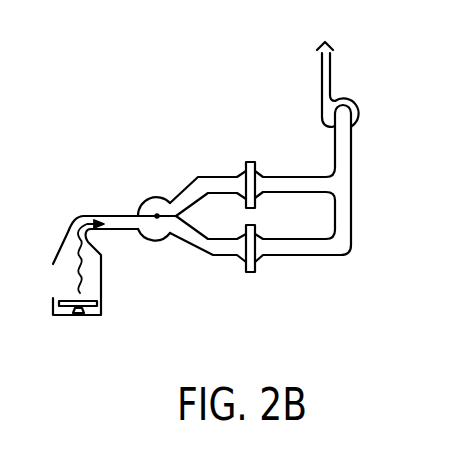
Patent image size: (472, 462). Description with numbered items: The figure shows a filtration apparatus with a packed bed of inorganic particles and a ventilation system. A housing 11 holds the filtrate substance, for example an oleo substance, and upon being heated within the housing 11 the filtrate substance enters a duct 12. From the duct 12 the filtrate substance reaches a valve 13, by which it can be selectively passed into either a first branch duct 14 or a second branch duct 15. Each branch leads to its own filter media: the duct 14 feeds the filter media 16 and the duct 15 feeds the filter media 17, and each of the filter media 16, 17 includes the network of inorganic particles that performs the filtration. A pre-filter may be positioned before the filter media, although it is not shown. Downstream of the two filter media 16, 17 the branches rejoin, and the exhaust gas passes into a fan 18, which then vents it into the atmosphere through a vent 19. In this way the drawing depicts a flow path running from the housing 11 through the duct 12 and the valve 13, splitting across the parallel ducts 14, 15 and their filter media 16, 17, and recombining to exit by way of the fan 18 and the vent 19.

The housing 11 is at (101, 290).
The duct 12 is at (118, 213).
The valve 13 is at (155, 237).
The duct 14 is at (208, 177).
The duct 15 is at (210, 257).
The filter media 16 is at (249, 162).
The filter media 17 is at (250, 272).
The fan 18 is at (362, 118).
The vent 19 is at (331, 73).